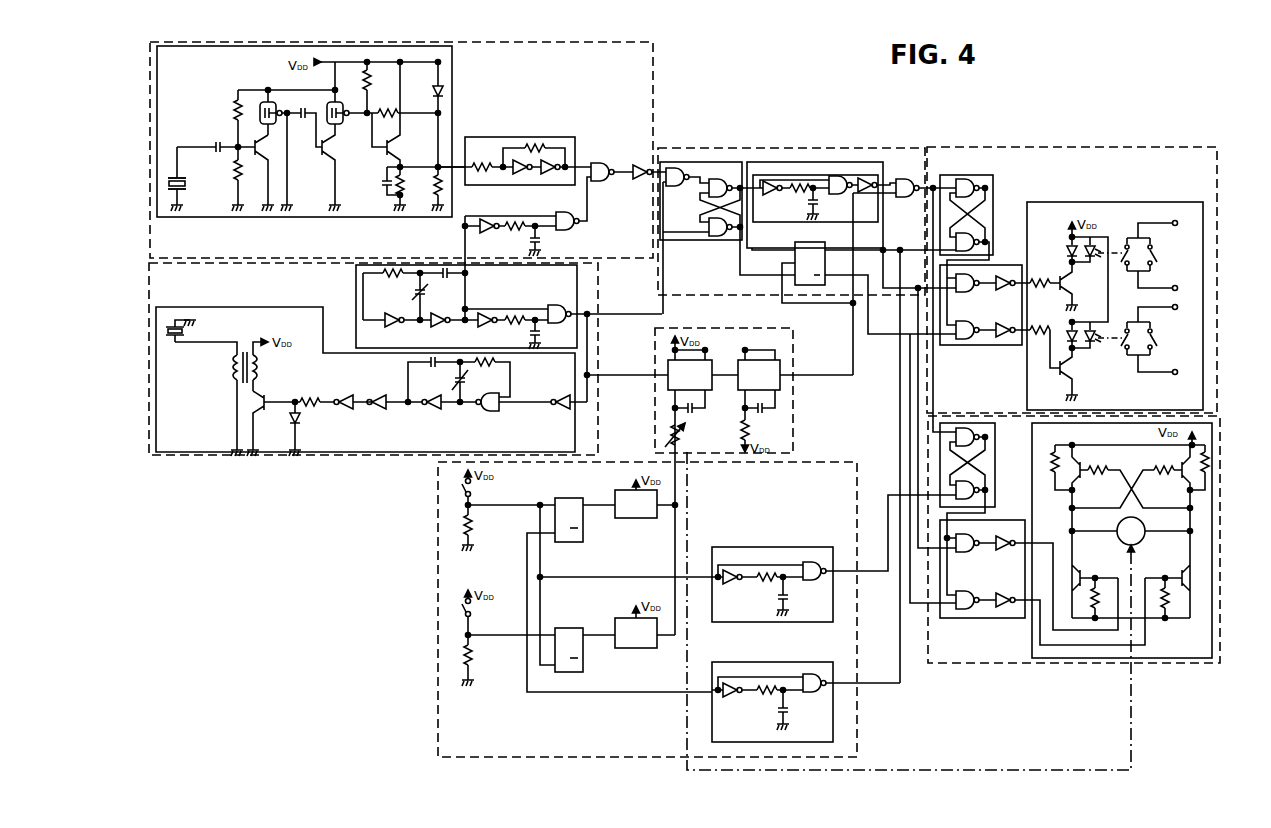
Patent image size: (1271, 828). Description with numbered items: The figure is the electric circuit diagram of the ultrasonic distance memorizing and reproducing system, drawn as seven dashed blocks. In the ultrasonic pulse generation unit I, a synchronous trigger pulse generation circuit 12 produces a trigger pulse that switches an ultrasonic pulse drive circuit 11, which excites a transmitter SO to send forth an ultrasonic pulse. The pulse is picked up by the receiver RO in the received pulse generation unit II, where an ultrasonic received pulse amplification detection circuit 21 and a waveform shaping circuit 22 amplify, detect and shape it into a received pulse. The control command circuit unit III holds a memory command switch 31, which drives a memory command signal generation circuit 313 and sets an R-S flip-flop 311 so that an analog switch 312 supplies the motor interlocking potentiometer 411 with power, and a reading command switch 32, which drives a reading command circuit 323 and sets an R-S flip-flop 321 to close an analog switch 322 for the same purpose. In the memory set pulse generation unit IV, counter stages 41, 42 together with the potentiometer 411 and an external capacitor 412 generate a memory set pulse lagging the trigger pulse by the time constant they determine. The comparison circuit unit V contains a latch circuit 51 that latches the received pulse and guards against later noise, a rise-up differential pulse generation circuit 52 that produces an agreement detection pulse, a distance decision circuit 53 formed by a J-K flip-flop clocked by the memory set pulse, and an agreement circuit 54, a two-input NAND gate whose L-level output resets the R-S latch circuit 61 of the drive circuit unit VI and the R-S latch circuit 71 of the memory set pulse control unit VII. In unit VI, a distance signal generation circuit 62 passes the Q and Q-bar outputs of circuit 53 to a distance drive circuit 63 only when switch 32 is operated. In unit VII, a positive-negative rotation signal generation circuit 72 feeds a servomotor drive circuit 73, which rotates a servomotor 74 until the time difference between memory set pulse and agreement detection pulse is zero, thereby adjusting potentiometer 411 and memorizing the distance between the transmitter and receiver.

The ultrasonic pulse generation unit I is at (268, 455).
The received pulse generation unit II is at (655, 76).
The control command circuit unit III is at (438, 624).
The memory set pulse generation unit IV is at (793, 426).
The comparison circuit unit V is at (790, 148).
The drive circuit unit VI is at (1080, 147).
The memory set pulse control unit VII is at (1042, 663).
The ultrasonic pulse drive circuit 11 is at (262, 307).
The synchronous trigger pulse generation circuit 12 is at (356, 296).
The ultrasonic received pulse amplification detection circuit 21 is at (452, 112).
The waveform shaping circuit 22 is at (535, 137).
The receiver RO is at (180, 188).
The transmitter SO is at (177, 340).
The memory command switch 31 is at (478, 488).
The reading command switch 32 is at (478, 607).
The R-S flip-flop 311 is at (570, 542).
The analog switch 312 is at (643, 518).
The memory command signal generation circuit 313 is at (776, 547).
The R-S flip-flop 321 is at (583, 668).
The analog switch 322 is at (647, 648).
The reading command circuit 323 is at (782, 662).
The counter 41 is at (700, 360).
The counter 42 is at (762, 360).
The motor interlocking potentiometer 411 is at (687, 439).
The external capacitor 412 is at (700, 412).
The latch circuit 51 is at (700, 240).
The rise-up differential pulse generation circuit 52 is at (883, 224).
The distance decision circuit 53 is at (812, 242).
The agreement circuit 54 is at (905, 174).
The R-S latch circuit 61 is at (993, 190).
The distance signal generation circuit 62 is at (982, 345).
The distance drive circuit 63 is at (1146, 202).
The R-S latch circuit 71 is at (1001, 449).
The positive-negative rotation signal generation circuit 72 is at (998, 618).
The servomotor drive circuit 73 is at (1032, 490).
The servomotor 74 is at (1145, 536).